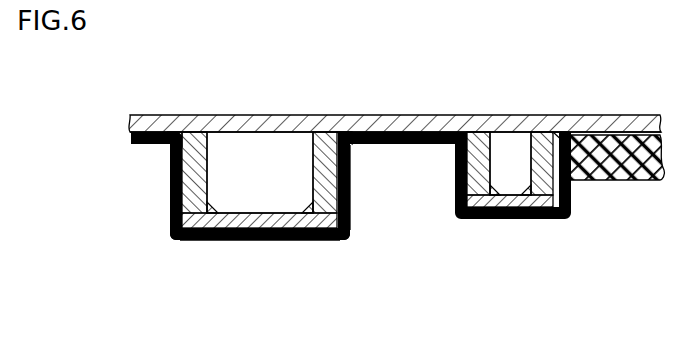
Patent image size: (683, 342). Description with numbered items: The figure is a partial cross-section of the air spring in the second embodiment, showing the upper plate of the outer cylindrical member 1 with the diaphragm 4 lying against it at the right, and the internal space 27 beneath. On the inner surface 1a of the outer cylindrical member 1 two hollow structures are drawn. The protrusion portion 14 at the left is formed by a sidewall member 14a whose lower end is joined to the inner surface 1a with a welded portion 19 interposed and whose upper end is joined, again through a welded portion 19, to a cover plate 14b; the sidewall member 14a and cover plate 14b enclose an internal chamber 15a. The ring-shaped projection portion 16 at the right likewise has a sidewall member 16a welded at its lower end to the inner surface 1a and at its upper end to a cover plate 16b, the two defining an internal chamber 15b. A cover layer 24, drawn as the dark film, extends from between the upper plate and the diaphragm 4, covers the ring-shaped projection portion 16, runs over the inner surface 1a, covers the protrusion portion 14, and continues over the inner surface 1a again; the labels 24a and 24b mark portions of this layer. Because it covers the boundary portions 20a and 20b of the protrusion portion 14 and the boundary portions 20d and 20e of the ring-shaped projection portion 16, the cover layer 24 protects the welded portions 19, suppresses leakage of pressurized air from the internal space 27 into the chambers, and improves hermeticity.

The outer cylindrical member 1 is at (397, 128).
The inner surface 1a is at (429, 135).
The diaphragm 4 is at (630, 170).
The protrusion portion 14 is at (220, 132).
The sidewall member 14a is at (190, 177).
The cover plate 14b is at (243, 213).
The internal chamber 15a is at (262, 153).
The internal chamber 15b is at (522, 155).
The ring-shaped projection portion 16 is at (509, 122).
The sidewall member 16a is at (491, 150).
The cover plate 16b is at (508, 193).
The welded portion 19 is at (303, 203).
The boundary portion 20a is at (182, 203).
The boundary portion 20b is at (320, 133).
The boundary portion 20d is at (478, 131).
The boundary portion 20e is at (467, 187).
The cover layer 24 is at (391, 147).
The groove side surface 24a is at (358, 205).
The groove bottom surface 24b is at (268, 233).
The internal space 27 is at (567, 283).